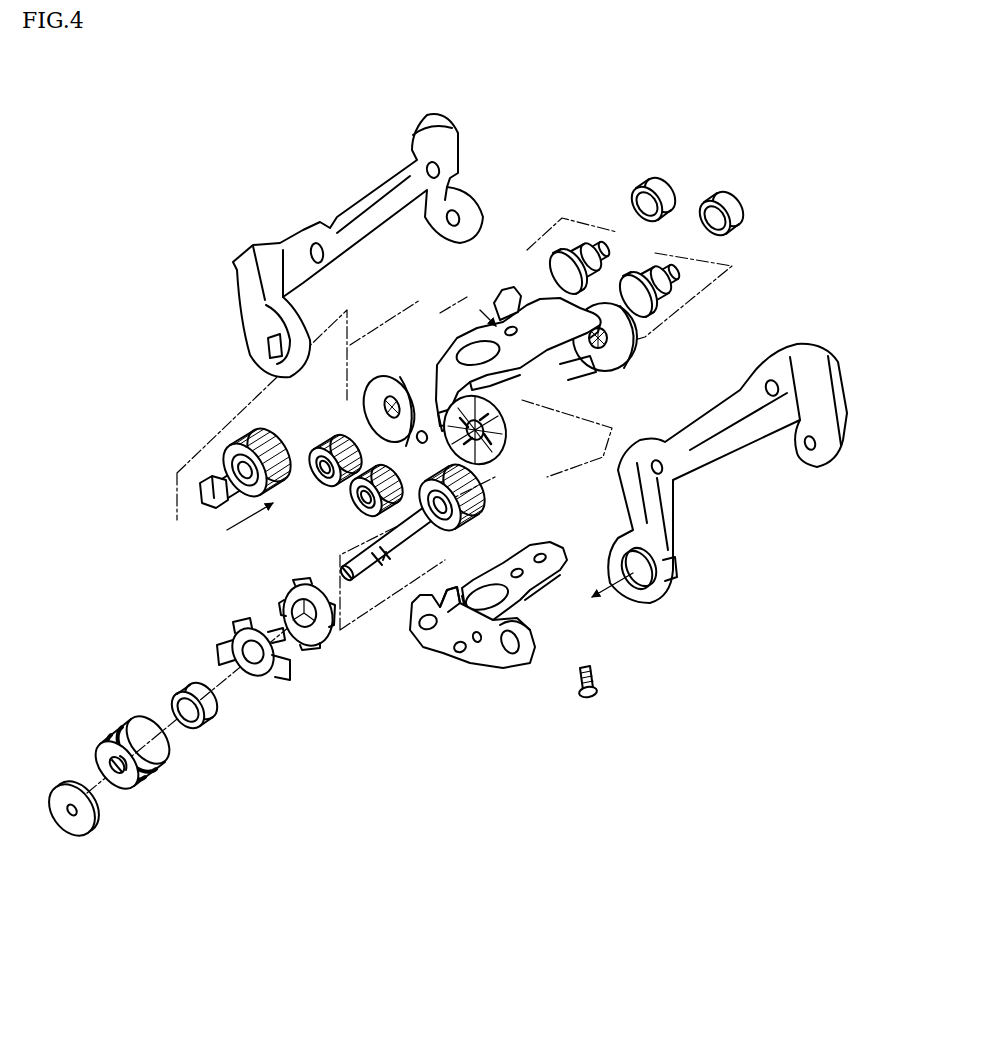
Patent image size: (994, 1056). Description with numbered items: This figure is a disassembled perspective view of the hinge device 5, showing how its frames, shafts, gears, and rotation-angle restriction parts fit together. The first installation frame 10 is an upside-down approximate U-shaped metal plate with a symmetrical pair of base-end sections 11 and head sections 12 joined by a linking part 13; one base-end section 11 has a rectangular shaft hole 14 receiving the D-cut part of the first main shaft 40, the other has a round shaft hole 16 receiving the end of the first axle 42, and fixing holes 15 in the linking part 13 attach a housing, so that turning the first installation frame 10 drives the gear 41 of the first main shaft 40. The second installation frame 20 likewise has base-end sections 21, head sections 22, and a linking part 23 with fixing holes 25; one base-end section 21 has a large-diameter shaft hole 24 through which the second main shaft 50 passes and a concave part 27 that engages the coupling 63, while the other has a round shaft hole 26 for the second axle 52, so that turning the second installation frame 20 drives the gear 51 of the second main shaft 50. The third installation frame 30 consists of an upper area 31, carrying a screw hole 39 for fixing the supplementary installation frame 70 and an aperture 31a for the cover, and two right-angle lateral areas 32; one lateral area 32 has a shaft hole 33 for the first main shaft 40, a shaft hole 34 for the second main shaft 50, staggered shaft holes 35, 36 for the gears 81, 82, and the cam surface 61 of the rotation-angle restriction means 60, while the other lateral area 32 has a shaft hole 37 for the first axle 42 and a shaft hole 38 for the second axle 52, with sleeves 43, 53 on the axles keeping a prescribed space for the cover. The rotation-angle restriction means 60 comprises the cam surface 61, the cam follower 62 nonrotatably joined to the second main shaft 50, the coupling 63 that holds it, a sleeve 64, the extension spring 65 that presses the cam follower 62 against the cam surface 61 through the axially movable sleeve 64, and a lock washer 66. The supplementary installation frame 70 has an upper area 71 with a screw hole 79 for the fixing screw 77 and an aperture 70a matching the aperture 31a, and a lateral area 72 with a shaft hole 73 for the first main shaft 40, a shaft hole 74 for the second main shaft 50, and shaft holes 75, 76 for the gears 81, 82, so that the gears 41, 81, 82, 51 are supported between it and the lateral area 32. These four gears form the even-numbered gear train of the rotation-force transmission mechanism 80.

The hinge device 5 is at (300, 118).
The first installation frame 10 is at (355, 221).
The base-end sections 11 is at (430, 237).
The head sections 12 is at (457, 142).
The linking part 13 is at (368, 222).
The rectangular shaft hole 14 is at (268, 342).
The fixing holes 15 is at (428, 168).
The round shaft hole 16 is at (456, 216).
The second installation frame 20 is at (737, 467).
The base-end sections 21 is at (827, 466).
The head sections 22 is at (838, 357).
The linking part 23 is at (720, 433).
The large-diameter shaft hole 24 is at (630, 583).
The fixing holes 25 is at (766, 384).
The round shaft hole 26 is at (807, 451).
The concave part 27 is at (678, 566).
The third installation frame 30 is at (477, 365).
The upper area 31 is at (437, 368).
The aperture 31a is at (465, 342).
The lateral areas 32 is at (392, 376).
The shaft hole 33 is at (384, 404).
The shaft hole 34 is at (481, 466).
The shaft hole 35 is at (420, 444).
The shaft hole 36 is at (446, 436).
The shaft hole 37 is at (512, 300).
The shaft hole 38 is at (602, 350).
The screw hole 39 is at (524, 350).
The first main shaft 40 is at (210, 477).
The gear 41 is at (270, 436).
The first axle 42 is at (582, 247).
The sleeve 43 is at (668, 182).
The second main shaft 50 is at (385, 593).
The gear 51 is at (488, 503).
The second axle 52 is at (674, 291).
The sleeve 53 is at (738, 208).
The rotation-angle restriction means 60 is at (400, 519).
The cam surface 61 is at (508, 428).
The cam follower 62 is at (287, 598).
The coupling 63 is at (257, 675).
The sleeve 64 is at (210, 715).
The extension spring 65 is at (150, 777).
The lock washer 66 is at (78, 826).
The supplementary installation frame 70 is at (463, 645).
The aperture 70a is at (518, 612).
The upper area 71 is at (525, 595).
The lateral area 72 is at (450, 604).
The shaft hole 73 is at (422, 630).
The shaft hole 74 is at (517, 652).
The shaft hole 75 is at (456, 651).
The shaft hole 76 is at (476, 641).
The fixing screw 77 is at (598, 687).
The screw hole 79 is at (523, 578).
The rotation-force transmission mechanism 80 is at (234, 527).
The gear 81 is at (327, 488).
The gear 82 is at (361, 520).